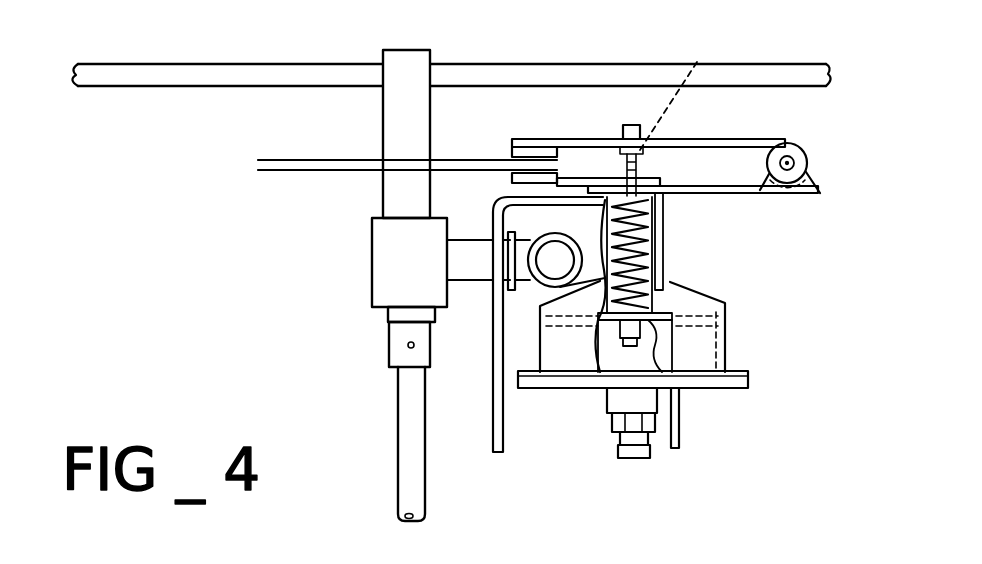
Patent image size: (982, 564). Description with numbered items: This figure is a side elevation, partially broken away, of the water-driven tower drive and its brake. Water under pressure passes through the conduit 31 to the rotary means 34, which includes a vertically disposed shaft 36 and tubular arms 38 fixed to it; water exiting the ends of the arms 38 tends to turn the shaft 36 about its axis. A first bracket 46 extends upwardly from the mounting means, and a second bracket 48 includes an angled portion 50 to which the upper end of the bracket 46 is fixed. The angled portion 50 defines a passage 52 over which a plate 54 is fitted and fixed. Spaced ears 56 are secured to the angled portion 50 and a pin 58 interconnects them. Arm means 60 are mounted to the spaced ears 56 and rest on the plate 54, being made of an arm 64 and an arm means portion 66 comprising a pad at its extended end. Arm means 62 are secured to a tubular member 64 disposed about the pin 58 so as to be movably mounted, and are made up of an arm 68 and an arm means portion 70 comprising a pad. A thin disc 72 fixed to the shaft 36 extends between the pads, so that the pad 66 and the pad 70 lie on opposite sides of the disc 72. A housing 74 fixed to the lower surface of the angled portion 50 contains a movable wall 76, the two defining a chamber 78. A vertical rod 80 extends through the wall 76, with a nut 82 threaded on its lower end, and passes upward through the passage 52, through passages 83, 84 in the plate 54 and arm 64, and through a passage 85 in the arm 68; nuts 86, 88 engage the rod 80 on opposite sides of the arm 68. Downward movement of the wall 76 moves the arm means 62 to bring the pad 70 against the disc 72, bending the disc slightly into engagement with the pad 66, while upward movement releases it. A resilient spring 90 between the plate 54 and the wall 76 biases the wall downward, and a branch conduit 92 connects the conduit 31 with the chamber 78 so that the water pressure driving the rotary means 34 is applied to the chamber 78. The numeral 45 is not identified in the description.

The conduit 31 is at (536, 291).
The rotary means 34 is at (362, 197).
The vertically disposed shaft 36 is at (402, 472).
The tubular arms 38 is at (147, 76).
The clamp block 45 is at (357, 292).
The first bracket 46 is at (682, 443).
The second bracket 48 is at (505, 432).
The angled portion 50 is at (752, 197).
The passage 52 is at (600, 208).
The plate 54 is at (685, 192).
The spaced ears 56 is at (832, 188).
The pin 58 is at (797, 163).
The arm means 60 is at (735, 195).
The arm means 62 is at (660, 136).
The tubular member / arm 64 is at (800, 147).
The arm means portion 66 is at (520, 178).
The arm 68 is at (583, 140).
The arm means portion 70 is at (520, 150).
The thin disc 72 is at (277, 170).
The housing 74 is at (742, 318).
The movable wall 76 is at (619, 346).
The chamber 78 is at (692, 350).
The vertical rod 80 is at (662, 250).
The nut 82 is at (655, 346).
The passage 83 is at (645, 185).
The passage 84 is at (618, 160).
The passage 85 is at (690, 64).
The nut 86 is at (662, 136).
The nut 88 is at (612, 134).
The resilient spring 90 is at (600, 284).
The branch conduit 92 is at (622, 458).